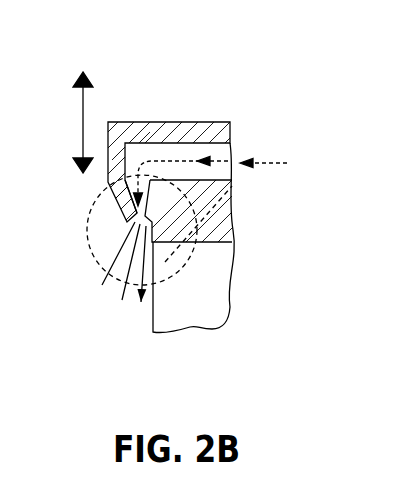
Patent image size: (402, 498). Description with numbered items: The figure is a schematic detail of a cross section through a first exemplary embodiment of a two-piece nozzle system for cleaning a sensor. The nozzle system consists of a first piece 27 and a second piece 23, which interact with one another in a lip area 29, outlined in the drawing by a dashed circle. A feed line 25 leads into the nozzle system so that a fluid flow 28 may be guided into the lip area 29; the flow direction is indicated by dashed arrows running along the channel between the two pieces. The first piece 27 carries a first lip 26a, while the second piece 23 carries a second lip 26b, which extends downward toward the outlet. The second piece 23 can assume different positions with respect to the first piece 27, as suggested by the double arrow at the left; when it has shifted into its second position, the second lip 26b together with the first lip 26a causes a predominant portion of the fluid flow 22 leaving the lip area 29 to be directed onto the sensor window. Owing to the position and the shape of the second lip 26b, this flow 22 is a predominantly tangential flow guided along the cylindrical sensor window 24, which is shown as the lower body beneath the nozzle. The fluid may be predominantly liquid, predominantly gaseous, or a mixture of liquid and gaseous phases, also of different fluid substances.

The predominantly tangential air flow 22 is at (132, 263).
The second piece of the two-piece nozzle system 23 is at (138, 122).
The cylindrical sensor window 24 is at (150, 316).
The feed line 25 is at (226, 178).
The first lip 26a is at (233, 187).
The second lip 26b is at (100, 205).
The first piece of the two-piece nozzle system 27 is at (214, 213).
The fluid flow 28 is at (231, 160).
The lip area 29 is at (100, 268).